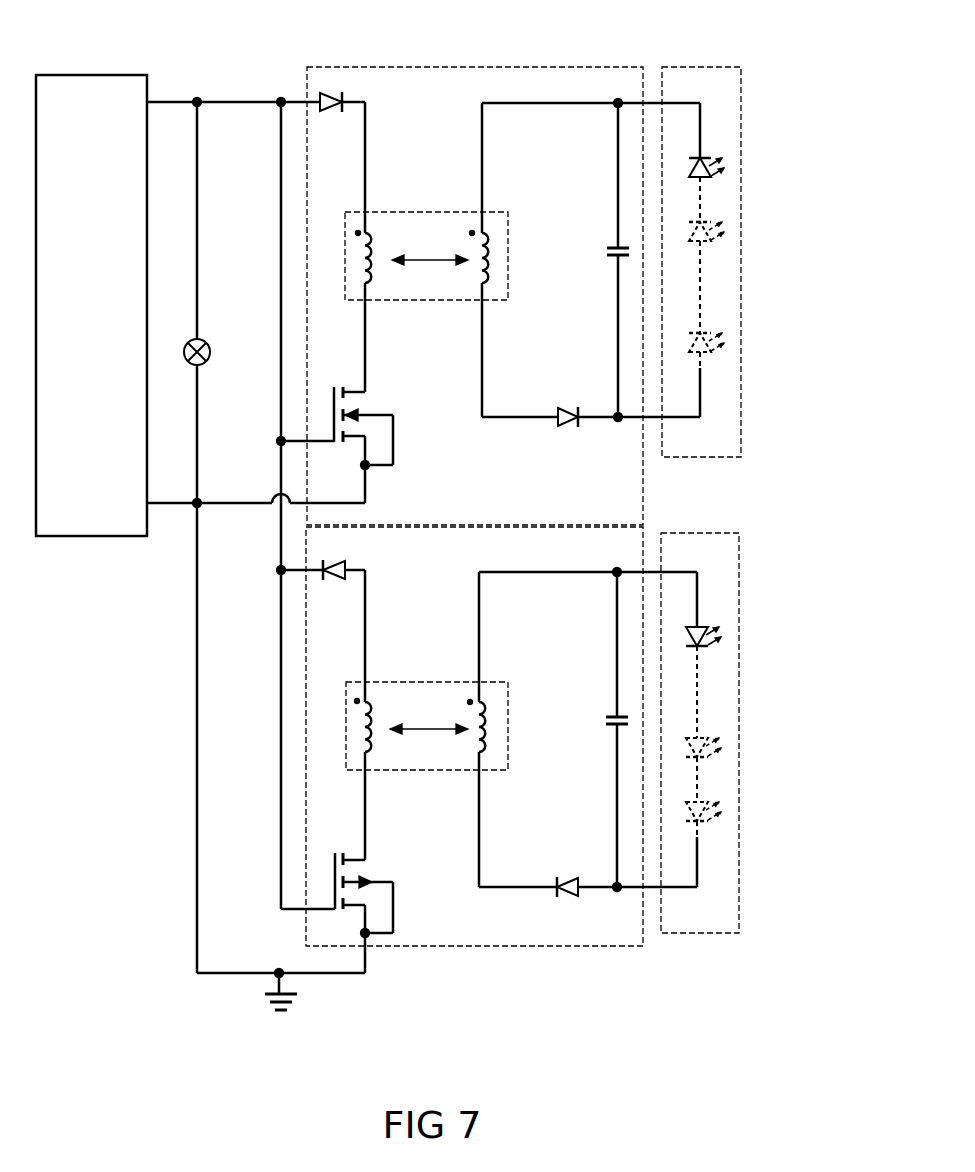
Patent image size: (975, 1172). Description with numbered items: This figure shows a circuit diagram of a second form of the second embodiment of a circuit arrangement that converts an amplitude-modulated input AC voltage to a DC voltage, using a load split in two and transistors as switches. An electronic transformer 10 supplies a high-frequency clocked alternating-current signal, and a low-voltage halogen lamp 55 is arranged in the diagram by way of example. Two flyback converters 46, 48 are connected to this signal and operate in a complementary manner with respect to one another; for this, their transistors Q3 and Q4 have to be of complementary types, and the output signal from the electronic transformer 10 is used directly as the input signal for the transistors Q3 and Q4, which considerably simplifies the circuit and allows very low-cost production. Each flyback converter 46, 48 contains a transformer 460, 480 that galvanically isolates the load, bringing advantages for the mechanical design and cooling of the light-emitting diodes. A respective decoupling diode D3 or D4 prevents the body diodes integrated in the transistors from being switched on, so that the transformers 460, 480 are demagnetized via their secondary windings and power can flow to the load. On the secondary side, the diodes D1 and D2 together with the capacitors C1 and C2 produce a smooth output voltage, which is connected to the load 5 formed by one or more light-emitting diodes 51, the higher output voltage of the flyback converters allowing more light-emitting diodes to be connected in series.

The electronic transformer 10 is at (74, 307).
The low-voltage halogen lamp 55 is at (211, 340).
The flyback converter 46 is at (565, 67).
The transformer 460 is at (422, 212).
The flyback converter 48 is at (500, 946).
The transformer 480 is at (422, 682).
The load 5 is at (742, 90).
The light-emitting diodes 51 is at (703, 157).
The diode D1 is at (568, 397).
The diode D2 is at (568, 869).
The decoupling diode D3 is at (334, 120).
The decoupling diode D4 is at (323, 587).
The capacitor C1 is at (605, 260).
The capacitor C2 is at (603, 729).
The transistor Q3 is at (359, 445).
The transistor Q4 is at (361, 913).